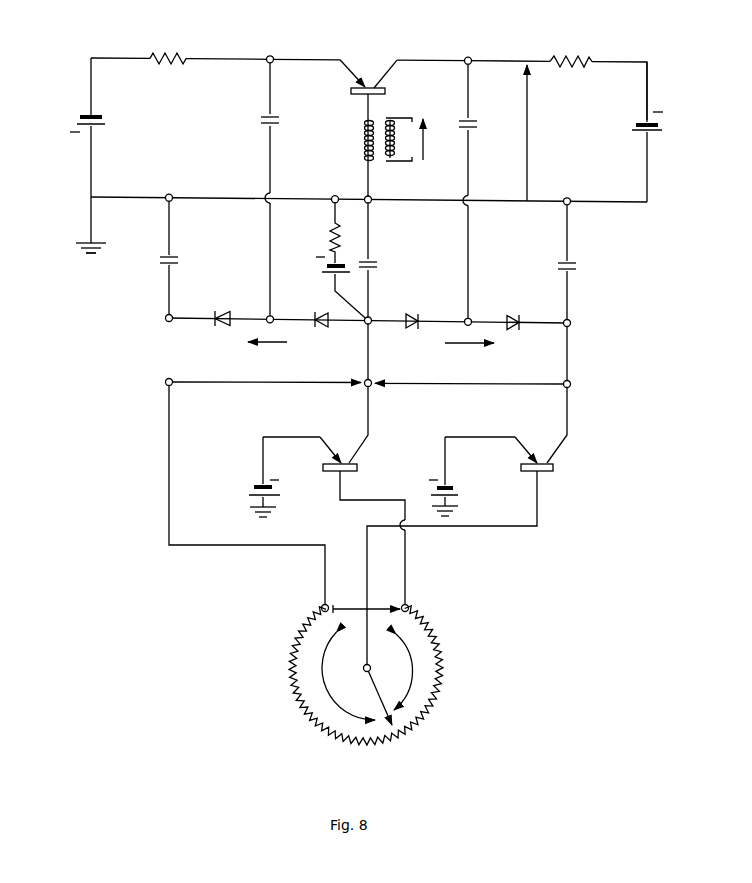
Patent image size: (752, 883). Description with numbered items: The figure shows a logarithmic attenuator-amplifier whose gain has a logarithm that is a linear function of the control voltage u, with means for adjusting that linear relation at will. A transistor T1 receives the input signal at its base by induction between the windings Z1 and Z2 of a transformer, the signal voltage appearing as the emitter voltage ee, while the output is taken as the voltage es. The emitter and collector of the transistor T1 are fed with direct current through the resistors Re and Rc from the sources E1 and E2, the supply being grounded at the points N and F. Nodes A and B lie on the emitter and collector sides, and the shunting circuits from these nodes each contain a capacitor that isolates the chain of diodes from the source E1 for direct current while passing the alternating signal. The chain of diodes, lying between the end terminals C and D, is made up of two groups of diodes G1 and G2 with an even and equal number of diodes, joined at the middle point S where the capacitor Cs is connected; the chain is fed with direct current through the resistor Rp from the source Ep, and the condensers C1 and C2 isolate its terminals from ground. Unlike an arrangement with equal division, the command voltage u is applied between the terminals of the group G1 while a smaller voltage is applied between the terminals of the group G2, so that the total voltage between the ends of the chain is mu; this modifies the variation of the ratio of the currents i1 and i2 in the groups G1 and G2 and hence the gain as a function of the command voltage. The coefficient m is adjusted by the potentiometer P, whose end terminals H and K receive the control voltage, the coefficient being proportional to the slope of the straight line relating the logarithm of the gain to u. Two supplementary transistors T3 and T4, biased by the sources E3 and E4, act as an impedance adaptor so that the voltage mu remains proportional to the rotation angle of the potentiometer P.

The direct current source E1 is at (71, 127).
The direct current source E2 is at (662, 132).
The direct current source E3 is at (248, 477).
The direct current source E4 is at (451, 476).
The direct current source Ep is at (331, 289).
The emitter resistor Re is at (169, 49).
The collector resistor Rc is at (571, 52).
The feed resistor Rp is at (319, 233).
The transistor T1 is at (372, 90).
The supplementary transistor T3 is at (334, 496).
The supplementary transistor T4 is at (468, 526).
The transformer winding Z1 is at (400, 139).
The transformer winding Z2 is at (366, 132).
The condenser C1 is at (155, 259).
The condenser C2 is at (575, 294).
The capacitor Cs is at (377, 293).
The group of diodes G1 is at (279, 311).
The group of diodes G2 is at (477, 314).
The emitter-side node A is at (269, 48).
The collector-side node B is at (466, 49).
The ground point N is at (88, 225).
The ground point F is at (95, 241).
The end terminal of diode chain C is at (160, 383).
The middle point of diode chain S is at (373, 376).
The end terminal of diode chain D is at (573, 384).
The potentiometer terminal H is at (318, 601).
The potentiometer terminal K is at (411, 601).
The potentiometer P is at (368, 688).
The emitter voltage ee is at (433, 139).
The output voltage es is at (536, 133).
The current in first diode group i1 is at (267, 352).
The current in second diode group i2 is at (469, 353).
The control voltage u is at (267, 373).
The total chain voltage mu is at (345, 676).